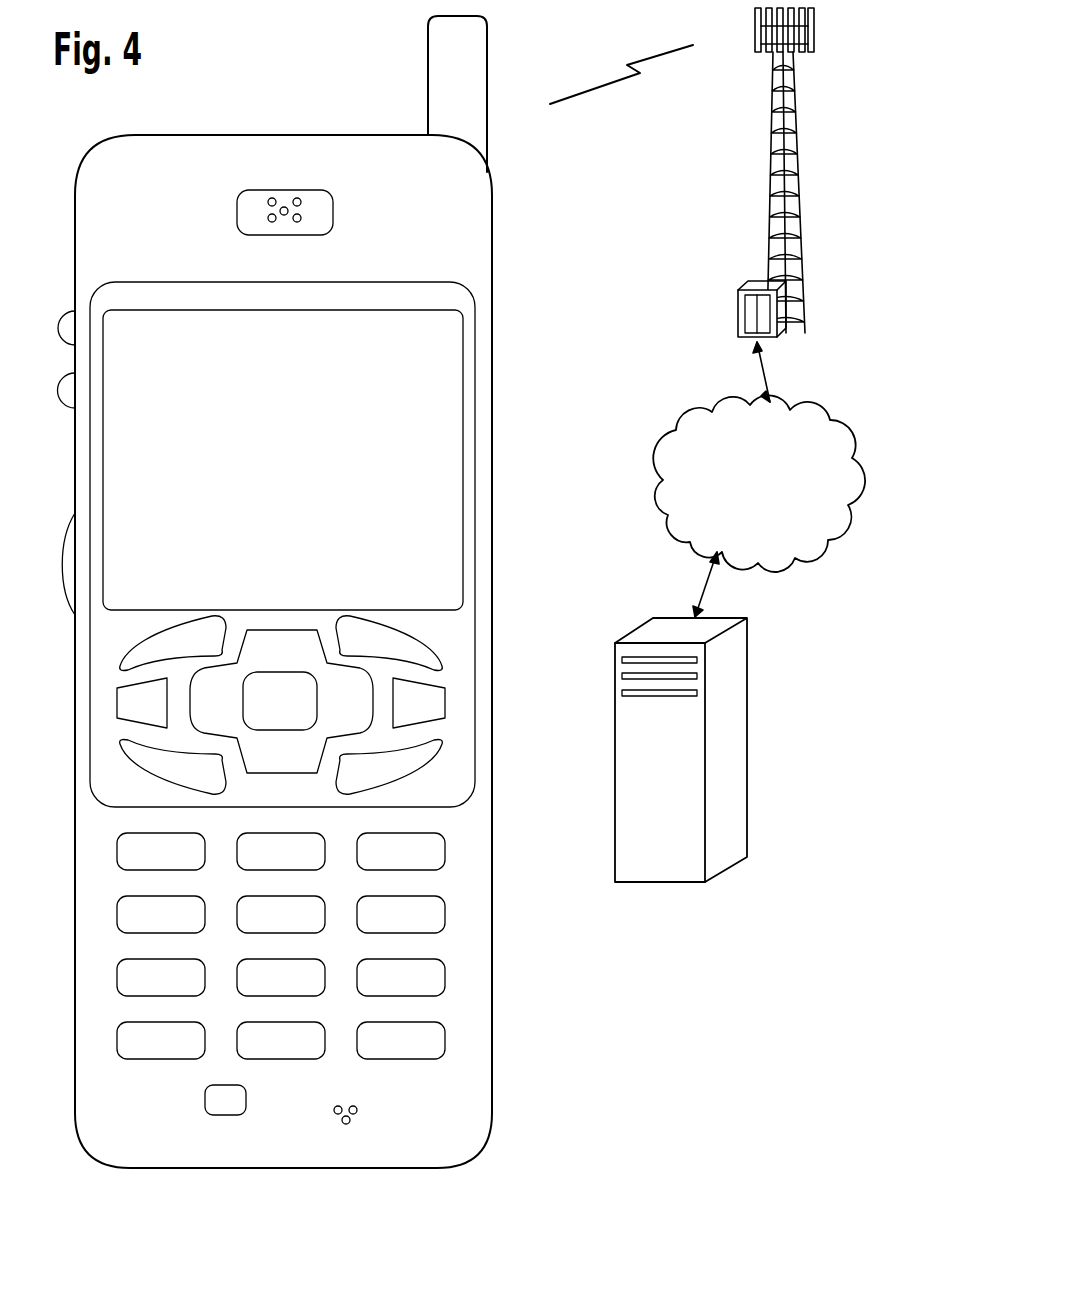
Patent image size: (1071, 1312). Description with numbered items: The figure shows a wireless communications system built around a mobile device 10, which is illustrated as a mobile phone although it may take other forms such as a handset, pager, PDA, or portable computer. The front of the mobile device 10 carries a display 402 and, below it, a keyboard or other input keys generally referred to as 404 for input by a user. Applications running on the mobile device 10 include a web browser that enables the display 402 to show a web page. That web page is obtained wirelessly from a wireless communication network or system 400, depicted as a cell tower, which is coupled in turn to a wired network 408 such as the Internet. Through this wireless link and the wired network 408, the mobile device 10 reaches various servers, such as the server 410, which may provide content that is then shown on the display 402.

The mobile device 10 is at (124, 1168).
The wireless communication network or system 400 is at (770, 188).
The display 402 is at (466, 322).
The input keys 404 is at (503, 618).
The wired network 408 is at (680, 530).
The server 410 is at (658, 884).